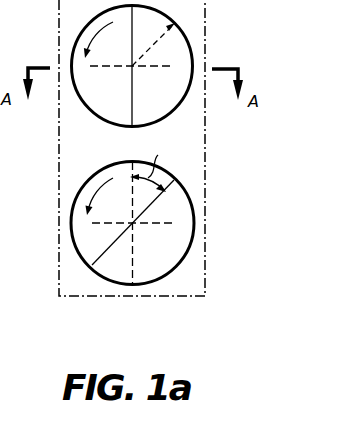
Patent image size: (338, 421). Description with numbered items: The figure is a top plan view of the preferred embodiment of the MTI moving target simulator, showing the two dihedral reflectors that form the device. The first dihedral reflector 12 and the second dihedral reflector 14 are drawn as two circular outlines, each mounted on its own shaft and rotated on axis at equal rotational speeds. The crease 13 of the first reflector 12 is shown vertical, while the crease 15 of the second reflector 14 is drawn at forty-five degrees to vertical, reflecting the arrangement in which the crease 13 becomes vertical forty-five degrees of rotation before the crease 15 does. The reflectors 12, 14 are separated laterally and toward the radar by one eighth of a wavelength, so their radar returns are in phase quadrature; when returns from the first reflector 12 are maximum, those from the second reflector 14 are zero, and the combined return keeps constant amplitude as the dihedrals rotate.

The first dihedral reflector 12 is at (183, 36).
The crease of the first reflector 13 is at (131, 45).
The second dihedral reflector 14 is at (185, 226).
The crease of the second reflector 15 is at (113, 243).